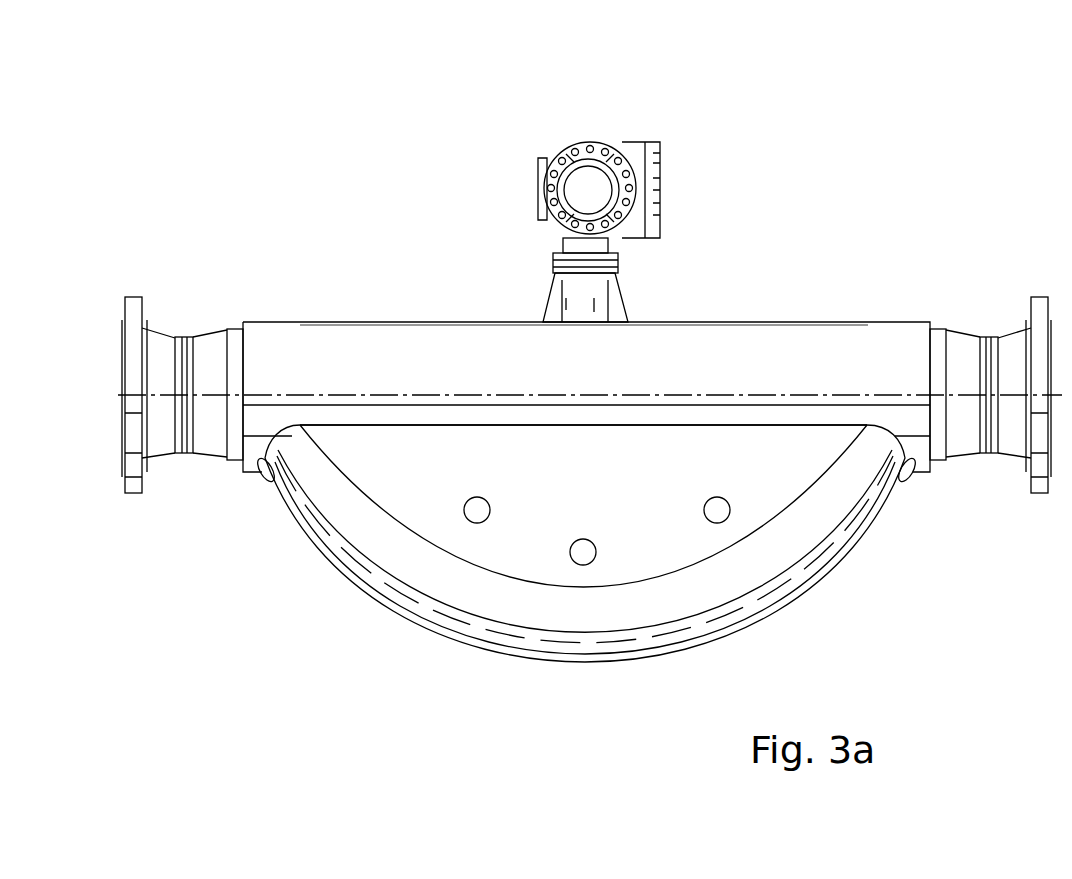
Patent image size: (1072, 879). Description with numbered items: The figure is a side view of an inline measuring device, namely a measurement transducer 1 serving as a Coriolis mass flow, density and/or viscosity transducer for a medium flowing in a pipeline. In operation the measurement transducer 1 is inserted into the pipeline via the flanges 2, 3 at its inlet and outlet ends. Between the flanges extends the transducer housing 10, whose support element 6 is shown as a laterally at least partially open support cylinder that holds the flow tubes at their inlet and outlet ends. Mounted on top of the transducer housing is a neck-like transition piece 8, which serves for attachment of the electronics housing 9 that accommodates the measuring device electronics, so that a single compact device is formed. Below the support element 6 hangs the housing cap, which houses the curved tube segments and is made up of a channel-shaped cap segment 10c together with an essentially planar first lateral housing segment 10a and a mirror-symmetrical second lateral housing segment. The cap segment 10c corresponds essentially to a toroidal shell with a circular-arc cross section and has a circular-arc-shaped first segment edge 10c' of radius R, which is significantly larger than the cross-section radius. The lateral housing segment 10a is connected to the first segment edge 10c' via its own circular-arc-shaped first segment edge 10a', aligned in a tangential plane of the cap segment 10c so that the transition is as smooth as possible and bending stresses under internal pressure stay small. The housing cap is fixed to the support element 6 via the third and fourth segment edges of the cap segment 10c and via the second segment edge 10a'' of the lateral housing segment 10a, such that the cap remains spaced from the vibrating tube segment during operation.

The measurement transducer 1 is at (790, 225).
The flange 2 is at (135, 297).
The flange 3 is at (1038, 297).
The support element 6 is at (383, 338).
The transition piece 8 is at (628, 300).
The electronics housing 9 is at (618, 140).
The transducer housing 10 is at (341, 600).
The first lateral housing segment 10a is at (585, 574).
The first segment edge of the first lateral housing segment 10a' is at (583, 506).
The second segment edge of the first lateral housing segment 10a'' is at (583, 473).
The cap segment 10c is at (585, 600).
The first segment edge of the cap segment 10c' is at (585, 576).
The radius of the first segment edge R is at (537, 520).